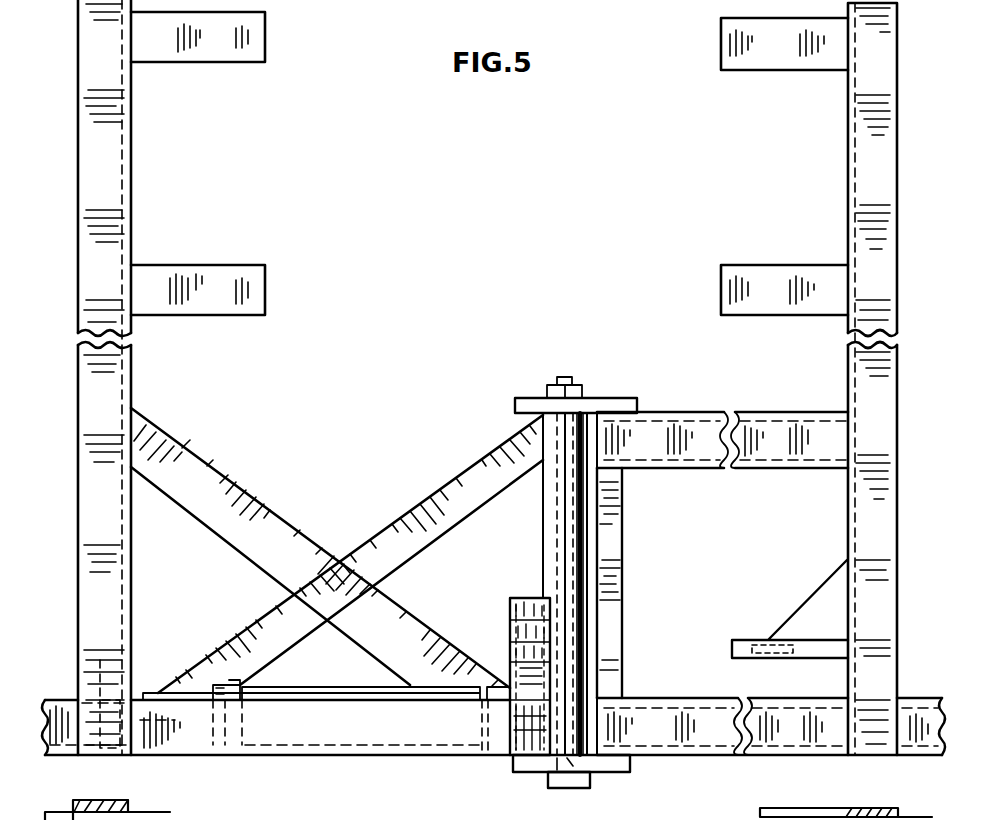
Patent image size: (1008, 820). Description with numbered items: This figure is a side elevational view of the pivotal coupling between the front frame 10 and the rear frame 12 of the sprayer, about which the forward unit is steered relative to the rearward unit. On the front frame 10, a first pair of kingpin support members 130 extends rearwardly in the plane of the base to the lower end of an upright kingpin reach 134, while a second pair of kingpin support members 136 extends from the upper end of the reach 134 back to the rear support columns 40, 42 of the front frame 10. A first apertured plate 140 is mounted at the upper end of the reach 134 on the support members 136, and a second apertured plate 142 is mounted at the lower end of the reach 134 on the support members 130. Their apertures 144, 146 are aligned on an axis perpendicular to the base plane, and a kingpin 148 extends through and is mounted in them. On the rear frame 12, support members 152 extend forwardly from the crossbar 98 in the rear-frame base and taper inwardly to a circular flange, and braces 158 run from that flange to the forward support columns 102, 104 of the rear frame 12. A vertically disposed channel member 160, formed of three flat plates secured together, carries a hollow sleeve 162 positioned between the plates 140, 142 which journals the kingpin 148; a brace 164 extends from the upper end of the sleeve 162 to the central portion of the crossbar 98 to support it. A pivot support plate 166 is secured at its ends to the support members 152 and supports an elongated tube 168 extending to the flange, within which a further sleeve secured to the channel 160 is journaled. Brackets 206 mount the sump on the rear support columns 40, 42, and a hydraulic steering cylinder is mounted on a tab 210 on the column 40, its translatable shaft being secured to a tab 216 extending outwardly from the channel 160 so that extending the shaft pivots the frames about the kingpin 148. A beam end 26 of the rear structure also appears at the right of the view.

The front frame 10 is at (848, 198).
The rear frame 12 is at (135, 214).
The beam end 26 is at (918, 712).
The rear support column 40 is at (874, 125).
The rear support column 42 is at (848, 812).
The crossbar 98 is at (101, 690).
The forward support column 102 is at (130, 813).
The forward support column 104 is at (113, 109).
The kingpin support member 130 is at (788, 733).
The kingpin reach 134 is at (612, 540).
The kingpin support member 136 is at (748, 420).
The first apertured plate 140 is at (524, 396).
The second apertured plate 142 is at (607, 775).
The aperture 144 is at (580, 405).
The aperture 146 is at (565, 787).
The kingpin 148 is at (560, 385).
The support member 152 is at (348, 720).
The brace 158 is at (205, 487).
The channel member 160 is at (527, 667).
The hollow sleeve 162 is at (577, 600).
The brace 164 is at (445, 488).
The pivot support plate 166 is at (240, 680).
The elongated tube 168 is at (278, 688).
The bracket 206 is at (762, 52).
The tab 210 is at (745, 640).
The tab 216 is at (515, 628).